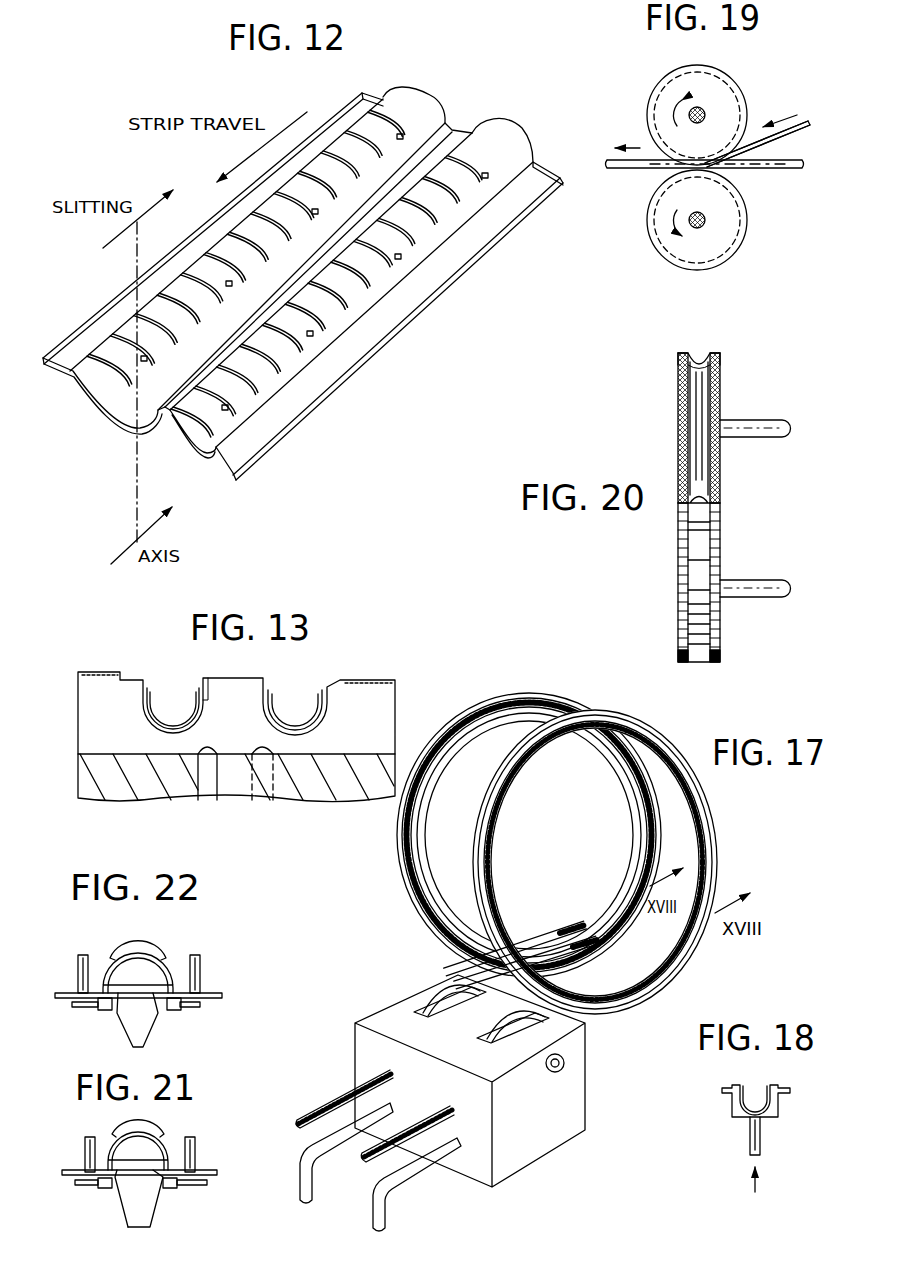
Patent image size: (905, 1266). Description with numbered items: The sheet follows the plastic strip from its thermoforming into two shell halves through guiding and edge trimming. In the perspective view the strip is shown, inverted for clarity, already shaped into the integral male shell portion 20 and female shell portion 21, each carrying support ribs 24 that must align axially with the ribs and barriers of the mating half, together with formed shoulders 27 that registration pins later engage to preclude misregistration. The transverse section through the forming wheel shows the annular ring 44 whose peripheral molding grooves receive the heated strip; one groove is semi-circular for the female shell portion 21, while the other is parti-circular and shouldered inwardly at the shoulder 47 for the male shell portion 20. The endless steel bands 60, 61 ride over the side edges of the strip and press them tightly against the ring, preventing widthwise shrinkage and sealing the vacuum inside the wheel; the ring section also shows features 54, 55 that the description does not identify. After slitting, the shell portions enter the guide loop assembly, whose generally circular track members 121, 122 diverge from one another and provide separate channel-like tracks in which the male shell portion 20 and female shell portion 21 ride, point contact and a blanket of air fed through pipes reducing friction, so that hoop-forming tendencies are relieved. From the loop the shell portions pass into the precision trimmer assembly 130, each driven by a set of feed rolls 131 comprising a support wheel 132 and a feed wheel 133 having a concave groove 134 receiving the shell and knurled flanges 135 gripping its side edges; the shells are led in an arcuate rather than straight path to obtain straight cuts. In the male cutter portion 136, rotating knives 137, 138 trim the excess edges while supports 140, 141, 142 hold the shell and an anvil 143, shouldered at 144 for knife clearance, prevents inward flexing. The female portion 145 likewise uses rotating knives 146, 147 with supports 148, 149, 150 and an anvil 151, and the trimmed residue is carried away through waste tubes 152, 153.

In FIG. 12, the male shell portion 20 is at (517, 133).
In FIG. 19, the male shell portion 20 is at (810, 107).
In FIG. 13, the male shell portion 20 is at (193, 690).
In FIG. 17, the male shell portion 20 is at (575, 928).
In FIG. 18, the male shell portion 20 is at (776, 1086).
In FIG. 21, the male shell portion 20 is at (168, 1142).
In FIG. 12, the female shell portion 21 is at (438, 104).
In FIG. 19, the female shell portion 21 is at (757, 144).
In FIG. 13, the female shell portion 21 is at (267, 693).
In FIG. 17, the female shell portion 21 is at (594, 938).
In FIG. 22, the female shell portion 21 is at (160, 948).
In FIG. 12, the support rib 24 is at (413, 243).
In FIG. 12, the formed shoulder 27 is at (312, 338).
In FIG. 13, the annular ring 44 is at (395, 728).
In FIG. 13, the shoulder 47 is at (203, 705).
In FIG. 13, the passage 54 is at (210, 792).
In FIG. 13, the passage 55 is at (263, 792).
In FIG. 13, the endless steel band 60 is at (376, 672).
In FIG. 13, the endless steel band 61 is at (98, 672).
In FIG. 17, the track member 121 is at (508, 695).
In FIG. 18, the track member 121 is at (778, 1108).
In FIG. 17, the track member 122 is at (717, 832).
In FIG. 17, the precision trimmer assembly 130 is at (378, 1003).
In FIG. 19, the feed rolls 131 is at (642, 182).
In FIG. 20, the feed rolls 131 is at (775, 390).
In FIG. 17, the feed rolls 131 is at (500, 1025).
In FIG. 19, the support wheel 132 is at (742, 247).
In FIG. 20, the support wheel 132 is at (680, 547).
In FIG. 19, the feed wheel 133 is at (740, 90).
In FIG. 20, the feed wheel 133 is at (680, 445).
In FIG. 19, the concave groove 134 is at (656, 90).
In FIG. 20, the concave groove 134 is at (699, 365).
In FIG. 20, the knurled flanges 135 is at (682, 355).
In FIG. 21, the male cutter portion 136 is at (205, 1138).
In FIG. 21, the rotating knife 137 is at (65, 1168).
In FIG. 21, the rotating knife 138 is at (210, 1170).
In FIG. 21, the support 140 is at (98, 1186).
In FIG. 21, the support 141 is at (178, 1190).
In FIG. 21, the support 142 is at (118, 1130).
In FIG. 21, the anvil 143 is at (152, 1215).
In FIG. 21, the shoulder 144 is at (118, 1185).
In FIG. 22, the female portion 145 is at (180, 945).
In FIG. 22, the rotating knife 146 is at (62, 992).
In FIG. 22, the rotating knife 147 is at (218, 990).
In FIG. 22, the support 148 is at (100, 1010).
In FIG. 22, the support 149 is at (178, 1010).
In FIG. 22, the support 150 is at (120, 945).
In FIG. 22, the anvil 151 is at (145, 1040).
In FIG. 17, the waste tube 152 is at (312, 1192).
In FIG. 17, the waste tube 153 is at (382, 1215).